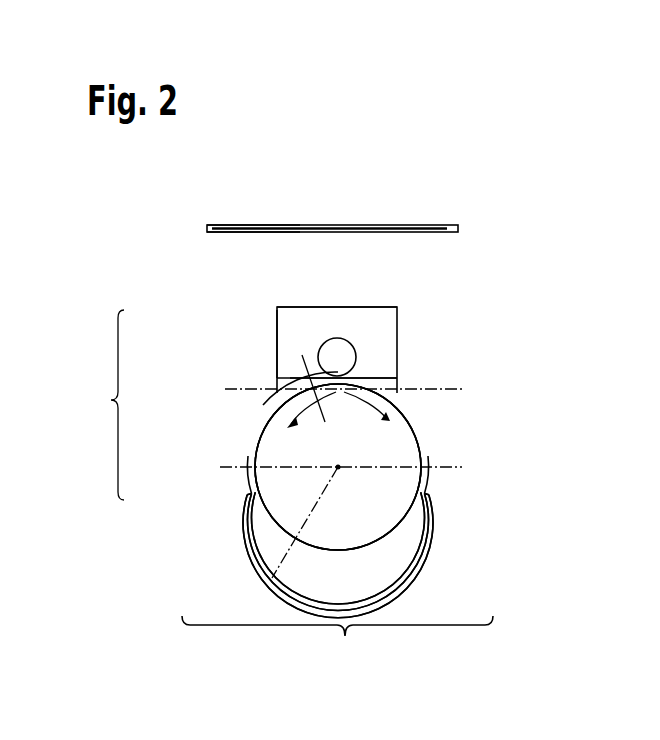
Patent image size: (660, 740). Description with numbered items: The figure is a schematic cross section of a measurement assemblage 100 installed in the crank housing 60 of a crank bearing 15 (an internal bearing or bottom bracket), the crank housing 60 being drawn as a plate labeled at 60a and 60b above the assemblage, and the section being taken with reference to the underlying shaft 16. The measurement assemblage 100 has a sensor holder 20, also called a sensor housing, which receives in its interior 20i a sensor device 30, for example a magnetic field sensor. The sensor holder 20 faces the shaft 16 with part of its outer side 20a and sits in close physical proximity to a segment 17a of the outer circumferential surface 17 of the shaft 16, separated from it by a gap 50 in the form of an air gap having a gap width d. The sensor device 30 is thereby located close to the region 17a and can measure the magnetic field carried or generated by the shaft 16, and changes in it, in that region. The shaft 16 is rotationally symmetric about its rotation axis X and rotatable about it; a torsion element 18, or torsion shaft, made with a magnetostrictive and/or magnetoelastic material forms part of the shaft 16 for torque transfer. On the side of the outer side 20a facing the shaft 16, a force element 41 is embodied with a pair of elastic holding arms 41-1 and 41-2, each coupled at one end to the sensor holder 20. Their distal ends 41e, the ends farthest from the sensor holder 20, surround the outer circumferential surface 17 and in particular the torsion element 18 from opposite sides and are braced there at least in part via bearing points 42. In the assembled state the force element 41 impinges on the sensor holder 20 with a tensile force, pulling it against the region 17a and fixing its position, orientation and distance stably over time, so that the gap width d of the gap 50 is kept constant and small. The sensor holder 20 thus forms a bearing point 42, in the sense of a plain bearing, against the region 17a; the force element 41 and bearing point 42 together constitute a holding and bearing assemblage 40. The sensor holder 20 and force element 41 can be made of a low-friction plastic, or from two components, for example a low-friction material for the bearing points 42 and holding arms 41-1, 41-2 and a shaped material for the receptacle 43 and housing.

The crank bearing 15 is at (330, 214).
The crank housing 60 is at (443, 223).
The upper side of cover plate 60a is at (230, 223).
The lower side of cover plate 60b is at (213, 234).
The sensor holder 20 is at (398, 315).
The outer side 20a is at (376, 301).
The interior 20i is at (297, 325).
The sensor device 30 is at (319, 352).
The holding and bearing assemblage 40 is at (480, 360).
The force element 41 is at (433, 453).
The first holding arm 41-1 is at (452, 478).
The second holding arm 41-2 is at (232, 477).
The distal ends 41e is at (250, 496).
The bearing point 42 is at (381, 379).
The receptacle 43 is at (366, 360).
The gap 50 is at (278, 400).
The outer circumferential surface 17 is at (412, 512).
The segment of outer circumferential surface 17a is at (365, 412).
The shaft 16 is at (338, 498).
The torsion element 18 is at (330, 520).
The measurement assemblage 100 is at (93, 405).
The rotation axis X is at (295, 535).
The gap width d is at (313, 399).